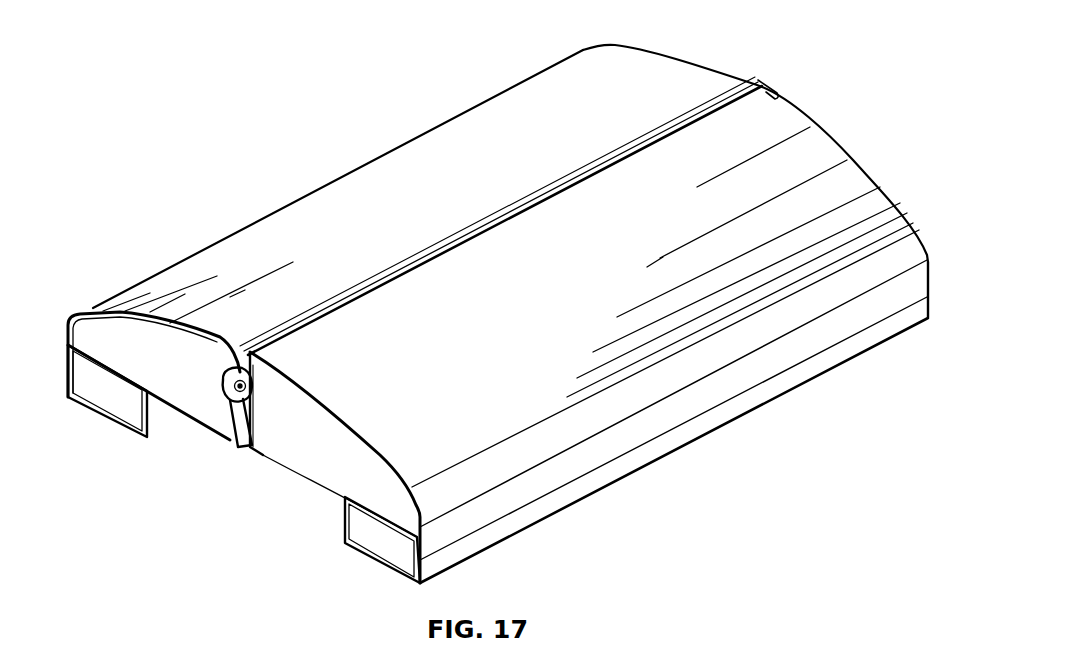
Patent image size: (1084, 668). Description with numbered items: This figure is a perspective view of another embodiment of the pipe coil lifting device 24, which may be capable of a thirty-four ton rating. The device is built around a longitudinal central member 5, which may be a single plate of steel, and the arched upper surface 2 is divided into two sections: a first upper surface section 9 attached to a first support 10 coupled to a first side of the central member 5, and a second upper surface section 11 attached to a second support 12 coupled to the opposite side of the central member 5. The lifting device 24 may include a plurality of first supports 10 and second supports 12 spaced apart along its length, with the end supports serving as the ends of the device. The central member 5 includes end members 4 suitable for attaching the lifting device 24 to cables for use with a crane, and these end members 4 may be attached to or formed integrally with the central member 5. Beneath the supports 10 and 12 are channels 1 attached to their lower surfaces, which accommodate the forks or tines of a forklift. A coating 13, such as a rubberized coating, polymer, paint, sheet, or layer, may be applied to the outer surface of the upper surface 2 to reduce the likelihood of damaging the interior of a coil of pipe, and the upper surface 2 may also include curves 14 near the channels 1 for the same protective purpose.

The channel 1 is at (105, 400).
The upper surface 2 is at (421, 125).
The end member 4 is at (223, 383).
The longitudinal central member 5 is at (727, 90).
The first upper surface section 9 is at (257, 240).
The first support 10 is at (220, 415).
The second upper surface section 11 is at (527, 343).
The second support 12 is at (310, 448).
The coating 13 is at (846, 179).
The curve 14 is at (837, 292).
The pipe coil lifting device 24 is at (522, 55).